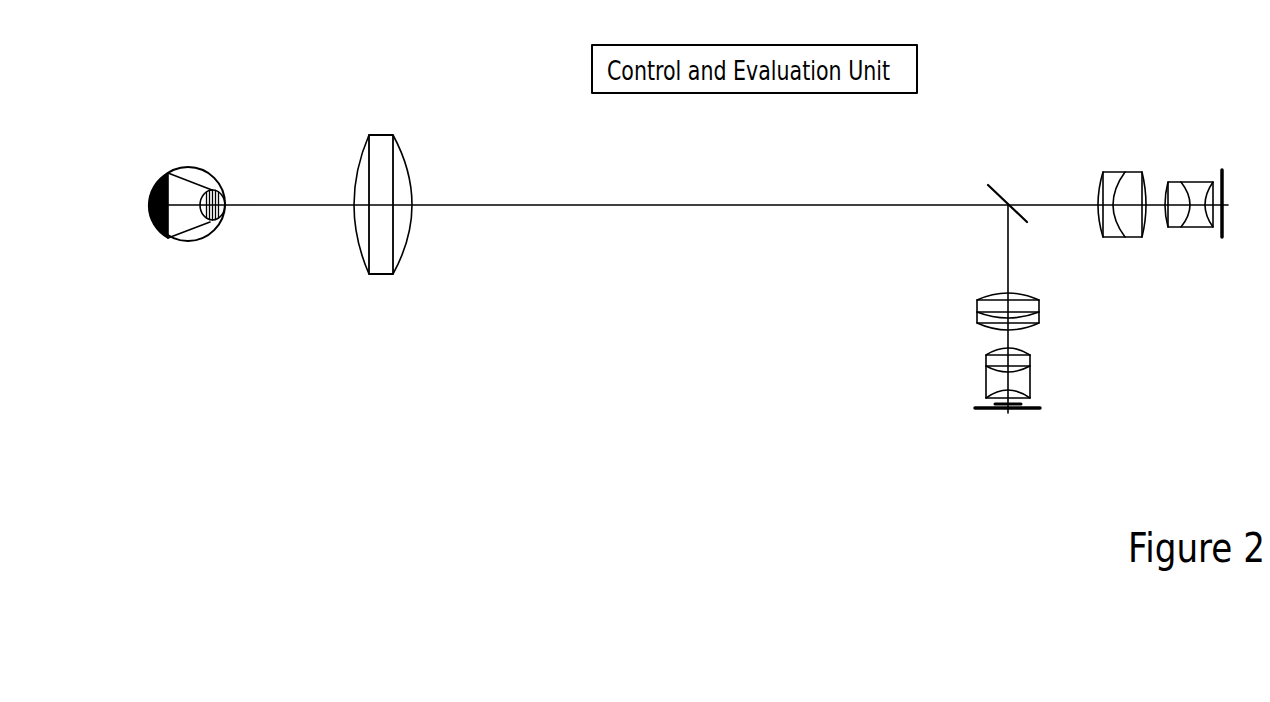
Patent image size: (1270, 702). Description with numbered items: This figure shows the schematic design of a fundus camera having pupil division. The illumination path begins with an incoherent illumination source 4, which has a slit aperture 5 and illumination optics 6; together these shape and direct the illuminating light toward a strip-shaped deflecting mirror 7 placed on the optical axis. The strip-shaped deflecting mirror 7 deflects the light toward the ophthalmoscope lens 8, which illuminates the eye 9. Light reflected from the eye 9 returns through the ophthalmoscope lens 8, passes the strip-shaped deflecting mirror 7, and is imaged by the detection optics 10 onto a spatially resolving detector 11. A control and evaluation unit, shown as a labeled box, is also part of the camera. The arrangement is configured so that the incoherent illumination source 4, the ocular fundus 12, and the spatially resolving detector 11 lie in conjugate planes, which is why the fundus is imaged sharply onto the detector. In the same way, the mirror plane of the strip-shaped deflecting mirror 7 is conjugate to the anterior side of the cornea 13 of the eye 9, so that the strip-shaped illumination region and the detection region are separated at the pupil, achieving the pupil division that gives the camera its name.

The incoherent illumination source 4 is at (1032, 410).
The slit aperture 5 is at (1023, 403).
The illumination optics 6 is at (965, 290).
The strip-shaped deflecting mirror 7 is at (992, 188).
The ophthalmoscope lens 8 is at (386, 267).
The eye 9 is at (188, 170).
The detection optics 10 is at (1093, 175).
The spatially resolving detector 11 is at (1227, 188).
The ocular fundus 12 is at (148, 207).
The cornea 13 is at (229, 215).